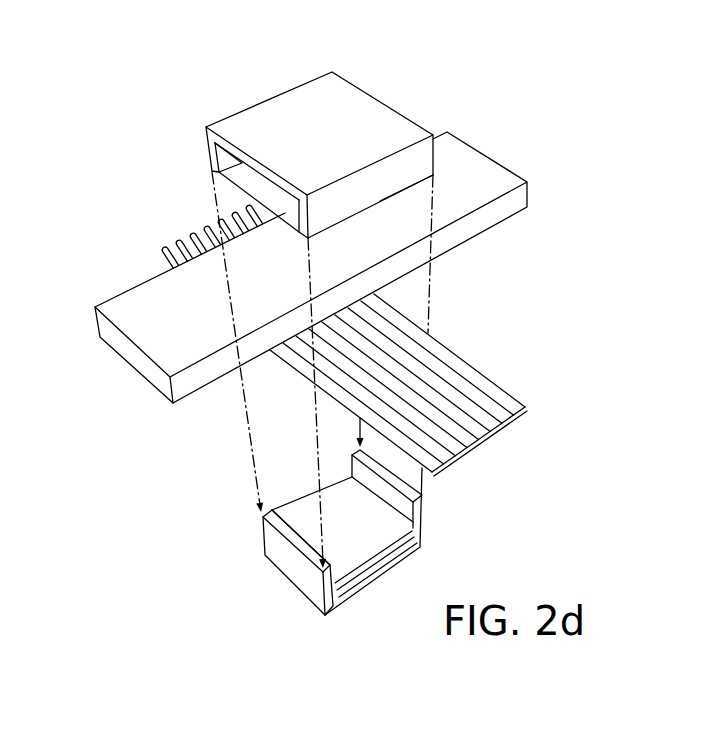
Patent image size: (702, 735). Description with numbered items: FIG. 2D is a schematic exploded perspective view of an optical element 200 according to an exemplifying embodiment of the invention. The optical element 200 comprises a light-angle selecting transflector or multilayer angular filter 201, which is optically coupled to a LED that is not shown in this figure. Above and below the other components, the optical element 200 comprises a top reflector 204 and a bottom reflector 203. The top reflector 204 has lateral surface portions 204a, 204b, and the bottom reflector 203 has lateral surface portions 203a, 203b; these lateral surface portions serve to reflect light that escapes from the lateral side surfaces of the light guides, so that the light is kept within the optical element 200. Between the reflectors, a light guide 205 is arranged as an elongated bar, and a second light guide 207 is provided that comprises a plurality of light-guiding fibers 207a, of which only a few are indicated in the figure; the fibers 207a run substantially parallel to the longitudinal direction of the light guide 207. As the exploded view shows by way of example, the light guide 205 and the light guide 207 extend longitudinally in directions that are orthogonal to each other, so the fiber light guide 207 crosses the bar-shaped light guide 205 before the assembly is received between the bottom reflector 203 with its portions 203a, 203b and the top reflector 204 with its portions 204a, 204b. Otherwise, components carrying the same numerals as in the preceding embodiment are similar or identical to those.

The optical element 200 is at (253, 91).
The light-angle selecting transflector or multilayer angular filter 201 is at (335, 518).
The bottom reflector 203 is at (295, 615).
The lateral surface portion 203a is at (297, 541).
The lateral surface portion 203b is at (422, 497).
The top reflector 204 is at (389, 72).
The lateral surface portion 204a is at (208, 153).
The lateral surface portion 204b is at (407, 188).
The light guide 205 is at (138, 305).
The light guide 207 is at (452, 333).
The light-guiding fibers 207a is at (472, 447).